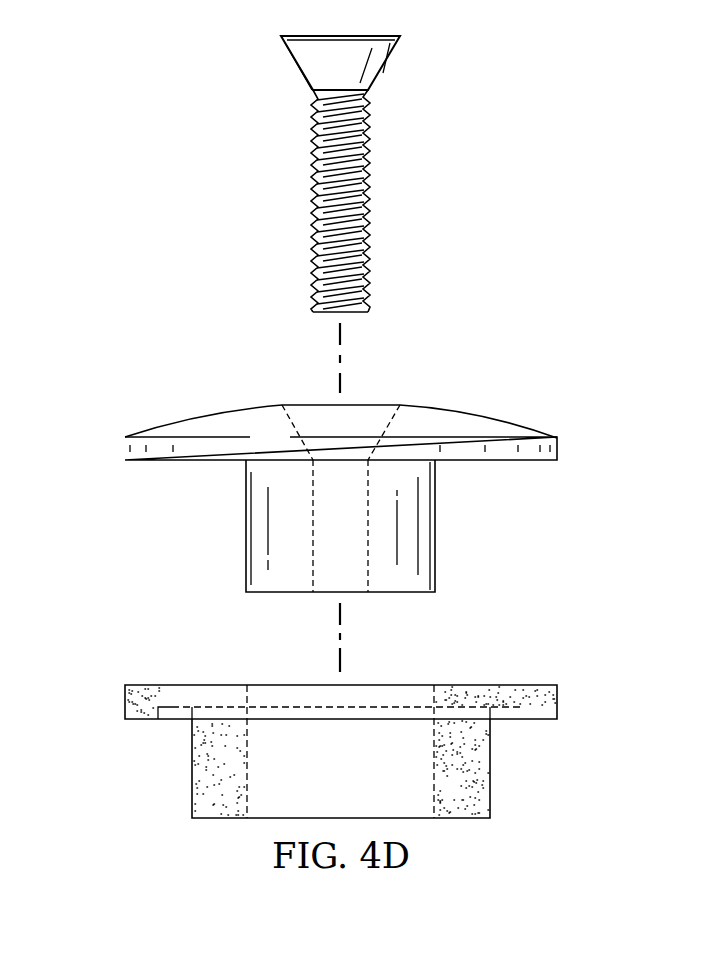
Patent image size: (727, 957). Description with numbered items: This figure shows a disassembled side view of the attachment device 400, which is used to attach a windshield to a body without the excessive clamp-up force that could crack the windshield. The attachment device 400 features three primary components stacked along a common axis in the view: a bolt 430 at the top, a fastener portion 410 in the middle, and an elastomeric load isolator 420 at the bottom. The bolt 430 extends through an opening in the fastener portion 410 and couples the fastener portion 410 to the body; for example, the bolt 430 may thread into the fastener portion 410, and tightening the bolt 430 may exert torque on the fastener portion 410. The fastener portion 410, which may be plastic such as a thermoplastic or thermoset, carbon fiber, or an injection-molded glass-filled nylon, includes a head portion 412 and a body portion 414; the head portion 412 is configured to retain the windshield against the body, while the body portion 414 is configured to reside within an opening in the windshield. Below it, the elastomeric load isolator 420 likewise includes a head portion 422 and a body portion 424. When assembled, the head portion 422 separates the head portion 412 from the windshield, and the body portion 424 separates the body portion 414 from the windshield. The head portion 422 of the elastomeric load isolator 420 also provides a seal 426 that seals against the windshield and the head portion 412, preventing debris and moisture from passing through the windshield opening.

The attachment device 400 is at (418, 211).
The bolt 430 is at (313, 183).
The fastener portion 410 is at (203, 419).
The head portion 412 is at (560, 445).
The body portion 414 is at (362, 541).
The elastomeric load isolator 420 is at (309, 686).
The head portion 422 is at (125, 703).
The body portion 424 is at (364, 786).
The seal 426 is at (520, 712).